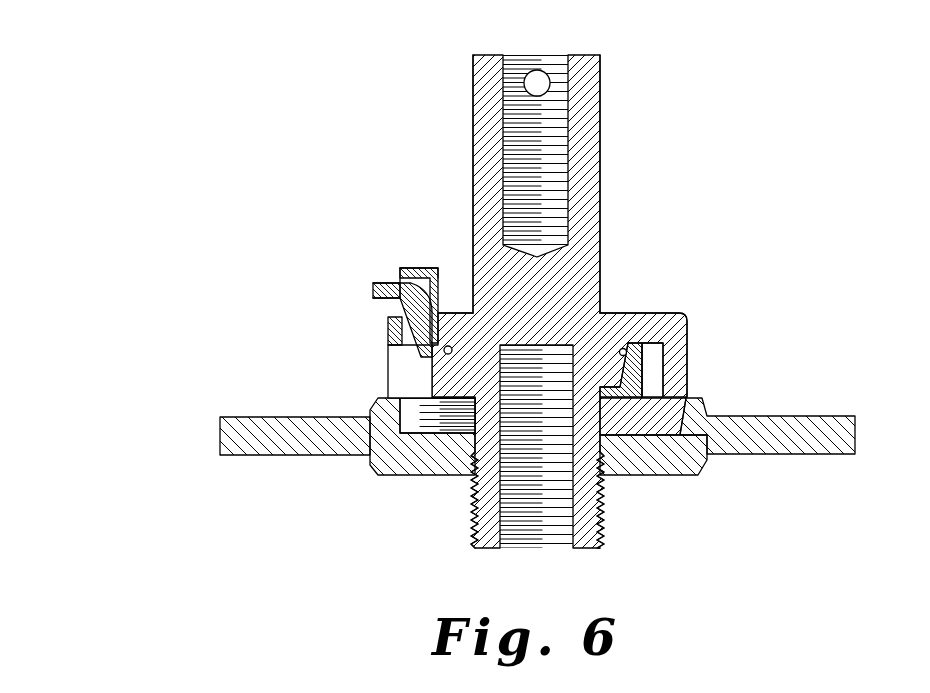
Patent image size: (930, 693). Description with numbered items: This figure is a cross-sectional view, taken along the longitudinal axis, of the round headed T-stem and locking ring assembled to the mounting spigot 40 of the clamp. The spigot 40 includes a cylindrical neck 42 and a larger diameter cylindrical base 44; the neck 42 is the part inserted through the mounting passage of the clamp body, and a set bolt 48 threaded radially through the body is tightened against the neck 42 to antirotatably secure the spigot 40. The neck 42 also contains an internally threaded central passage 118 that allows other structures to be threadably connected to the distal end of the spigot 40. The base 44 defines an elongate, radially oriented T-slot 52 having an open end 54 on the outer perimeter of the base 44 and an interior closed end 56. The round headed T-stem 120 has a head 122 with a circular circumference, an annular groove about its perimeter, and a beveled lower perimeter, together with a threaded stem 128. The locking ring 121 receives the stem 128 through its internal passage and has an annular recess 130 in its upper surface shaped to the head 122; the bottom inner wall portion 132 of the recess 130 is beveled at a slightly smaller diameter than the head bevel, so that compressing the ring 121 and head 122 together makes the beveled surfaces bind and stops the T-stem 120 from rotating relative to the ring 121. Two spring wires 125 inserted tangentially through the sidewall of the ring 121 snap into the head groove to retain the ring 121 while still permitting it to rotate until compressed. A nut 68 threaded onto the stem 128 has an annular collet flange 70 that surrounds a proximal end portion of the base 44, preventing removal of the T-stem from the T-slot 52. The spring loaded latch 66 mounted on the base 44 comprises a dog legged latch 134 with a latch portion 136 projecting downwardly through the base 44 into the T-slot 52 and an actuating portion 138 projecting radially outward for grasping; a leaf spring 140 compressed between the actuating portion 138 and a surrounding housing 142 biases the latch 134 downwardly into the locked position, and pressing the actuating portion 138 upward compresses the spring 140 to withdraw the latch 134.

The mounting spigot 40 is at (607, 183).
The cylindrical neck 42 is at (592, 90).
The cylindrical base 44 is at (688, 335).
The set bolt 48 is at (537, 70).
The T-slot 52 is at (417, 382).
The open end 54 is at (388, 357).
The interior closed end 56 is at (665, 377).
The spring loaded latch 66 is at (377, 265).
The nut 68 is at (695, 477).
The annular collet flange 70 is at (692, 407).
The internally threaded central passage 118 is at (566, 78).
The round headed T-stem 120 is at (470, 512).
The locking ring 121 is at (643, 377).
The head 122 is at (621, 349).
The spring wires 125 is at (603, 365).
The stem 128 is at (610, 513).
The annular recess 130 is at (450, 347).
The bottom inner wall portion 132 is at (412, 374).
The dog legged latch 134 is at (375, 280).
The latch portion 136 is at (390, 328).
The actuating portion 138 is at (373, 297).
The leaf spring 140 is at (402, 270).
The housing 142 is at (413, 267).